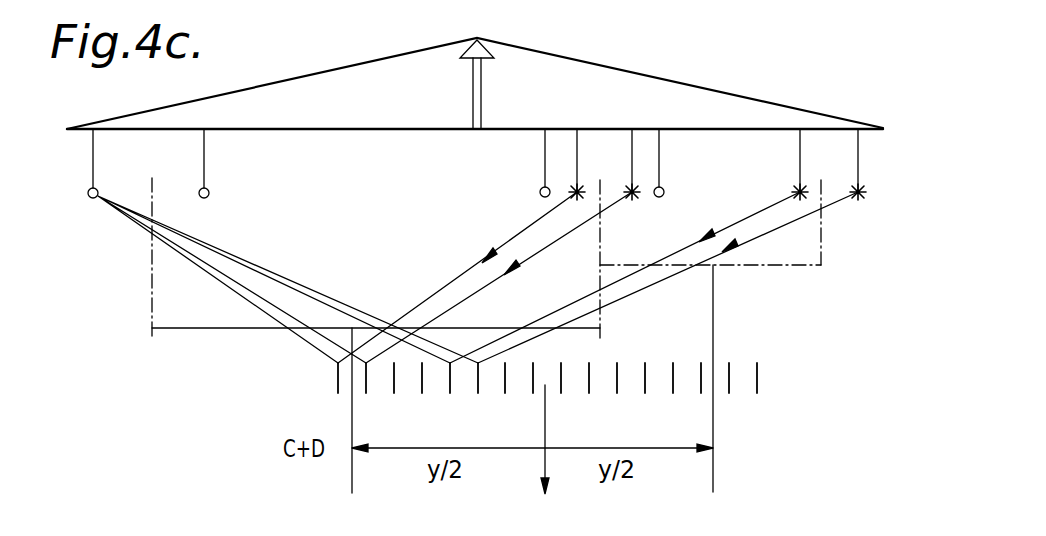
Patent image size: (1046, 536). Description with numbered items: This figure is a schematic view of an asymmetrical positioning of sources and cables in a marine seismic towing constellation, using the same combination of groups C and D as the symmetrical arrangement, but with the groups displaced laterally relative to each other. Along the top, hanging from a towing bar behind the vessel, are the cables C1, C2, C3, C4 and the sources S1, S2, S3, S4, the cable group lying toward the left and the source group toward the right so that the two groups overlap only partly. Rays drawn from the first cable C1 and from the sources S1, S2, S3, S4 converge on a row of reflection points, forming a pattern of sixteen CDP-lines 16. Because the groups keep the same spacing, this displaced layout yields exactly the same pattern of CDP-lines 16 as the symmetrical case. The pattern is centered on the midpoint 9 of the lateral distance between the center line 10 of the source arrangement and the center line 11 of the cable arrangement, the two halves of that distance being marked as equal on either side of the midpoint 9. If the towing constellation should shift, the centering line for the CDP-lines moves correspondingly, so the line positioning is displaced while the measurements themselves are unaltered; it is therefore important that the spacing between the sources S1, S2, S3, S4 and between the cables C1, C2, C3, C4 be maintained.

The midpoint 9 is at (545, 448).
The center line in the source arrangement 10 is at (715, 483).
The center line in the cable arrangement 11 is at (352, 468).
The colour dot pattern (16 CDP) 16 is at (600, 378).
The colour filter / light source C1 is at (271, 246).
The colour filter / light source C2 is at (190, 168).
The colour filter / light source C3 is at (530, 168).
The colour filter / light source C4 is at (675, 168).
The source point S1 is at (461, 246).
The source point S2 is at (503, 246).
The source point S3 is at (629, 246).
The source point S4 is at (685, 246).